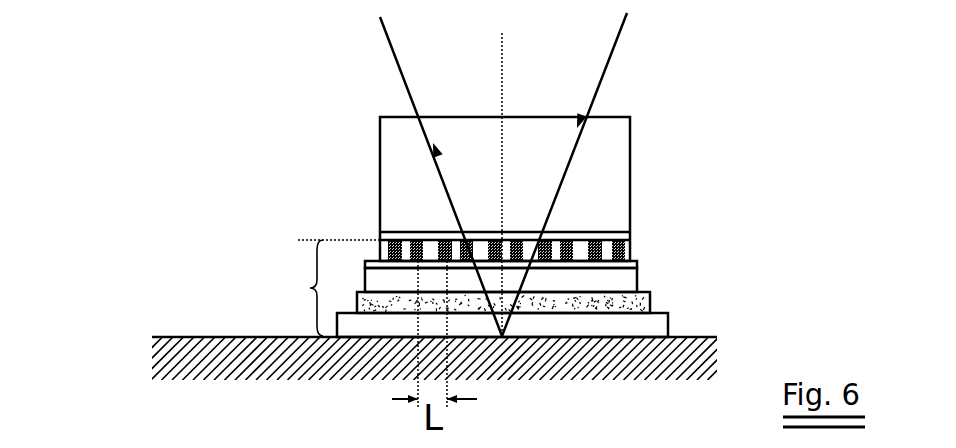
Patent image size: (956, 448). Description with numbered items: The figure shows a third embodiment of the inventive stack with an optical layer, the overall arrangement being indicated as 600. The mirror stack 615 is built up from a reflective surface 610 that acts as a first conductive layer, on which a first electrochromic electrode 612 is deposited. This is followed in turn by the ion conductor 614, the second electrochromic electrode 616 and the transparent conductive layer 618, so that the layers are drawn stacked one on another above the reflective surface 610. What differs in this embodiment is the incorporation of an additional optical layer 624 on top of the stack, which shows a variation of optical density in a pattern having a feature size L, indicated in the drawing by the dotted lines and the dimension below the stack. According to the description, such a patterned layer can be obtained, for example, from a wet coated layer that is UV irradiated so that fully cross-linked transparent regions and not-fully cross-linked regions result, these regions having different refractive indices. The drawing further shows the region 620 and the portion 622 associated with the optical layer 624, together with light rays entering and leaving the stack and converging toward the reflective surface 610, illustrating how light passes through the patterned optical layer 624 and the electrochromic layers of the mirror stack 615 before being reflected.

The optical assembly 600 is at (148, 63).
The reflective surface 610 is at (238, 336).
The first electrochromic electrode 612 is at (657, 327).
The ion conductor 614 is at (645, 300).
The mirror stack 615 is at (314, 288).
The second electrochromic electrode 616 is at (637, 282).
The transparent conductive layer 618 is at (637, 265).
The microlens array layer 620 is at (408, 237).
The optical element 622 is at (620, 172).
The optical layer 624 is at (385, 250).